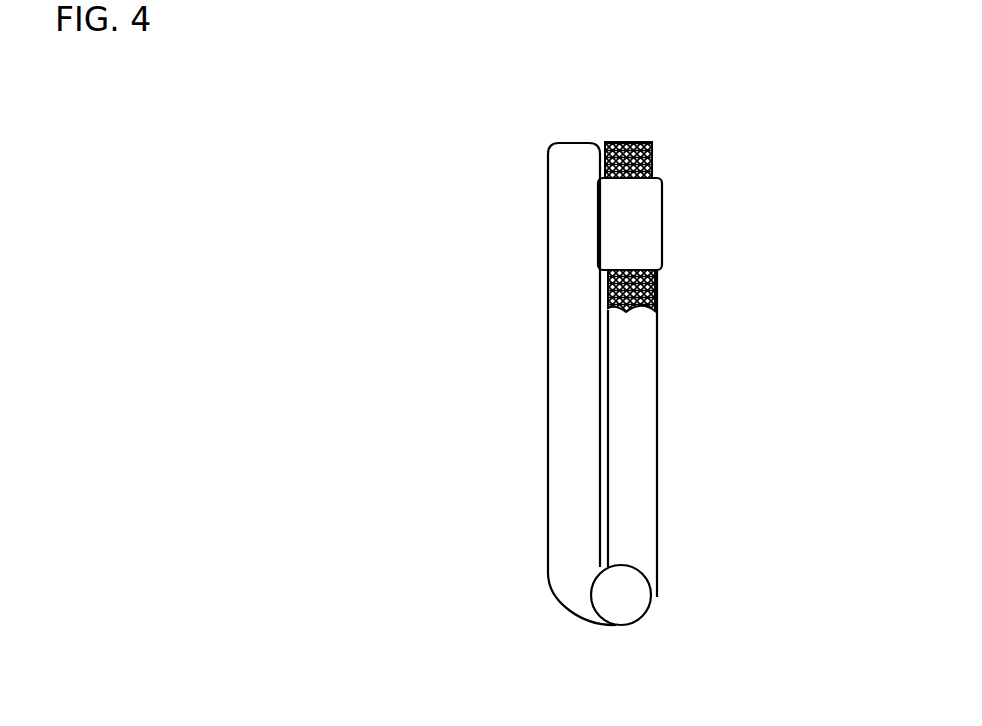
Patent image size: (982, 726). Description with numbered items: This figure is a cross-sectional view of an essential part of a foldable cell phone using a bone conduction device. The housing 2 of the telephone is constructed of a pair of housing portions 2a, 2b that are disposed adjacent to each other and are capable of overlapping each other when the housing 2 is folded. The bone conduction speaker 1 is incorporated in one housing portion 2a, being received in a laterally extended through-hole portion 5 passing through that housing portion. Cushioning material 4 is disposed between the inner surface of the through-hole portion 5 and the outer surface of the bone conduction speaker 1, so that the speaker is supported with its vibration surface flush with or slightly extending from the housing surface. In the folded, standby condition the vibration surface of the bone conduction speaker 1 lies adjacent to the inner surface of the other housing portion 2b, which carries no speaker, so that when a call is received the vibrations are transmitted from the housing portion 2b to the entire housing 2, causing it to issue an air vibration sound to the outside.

The bone conduction speaker 1 is at (652, 227).
The housing 2 is at (621, 369).
The housing portion 2a is at (650, 395).
The housing portion 2b is at (559, 250).
The cushioning material 4 is at (633, 142).
The through-hole portion 5 is at (655, 177).